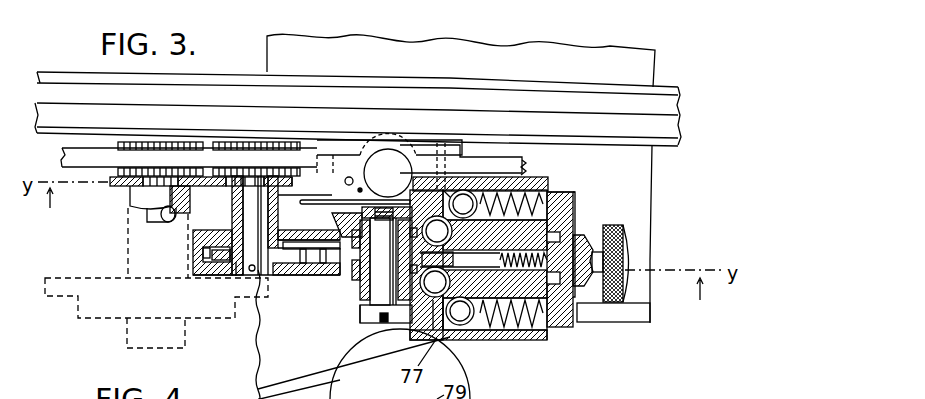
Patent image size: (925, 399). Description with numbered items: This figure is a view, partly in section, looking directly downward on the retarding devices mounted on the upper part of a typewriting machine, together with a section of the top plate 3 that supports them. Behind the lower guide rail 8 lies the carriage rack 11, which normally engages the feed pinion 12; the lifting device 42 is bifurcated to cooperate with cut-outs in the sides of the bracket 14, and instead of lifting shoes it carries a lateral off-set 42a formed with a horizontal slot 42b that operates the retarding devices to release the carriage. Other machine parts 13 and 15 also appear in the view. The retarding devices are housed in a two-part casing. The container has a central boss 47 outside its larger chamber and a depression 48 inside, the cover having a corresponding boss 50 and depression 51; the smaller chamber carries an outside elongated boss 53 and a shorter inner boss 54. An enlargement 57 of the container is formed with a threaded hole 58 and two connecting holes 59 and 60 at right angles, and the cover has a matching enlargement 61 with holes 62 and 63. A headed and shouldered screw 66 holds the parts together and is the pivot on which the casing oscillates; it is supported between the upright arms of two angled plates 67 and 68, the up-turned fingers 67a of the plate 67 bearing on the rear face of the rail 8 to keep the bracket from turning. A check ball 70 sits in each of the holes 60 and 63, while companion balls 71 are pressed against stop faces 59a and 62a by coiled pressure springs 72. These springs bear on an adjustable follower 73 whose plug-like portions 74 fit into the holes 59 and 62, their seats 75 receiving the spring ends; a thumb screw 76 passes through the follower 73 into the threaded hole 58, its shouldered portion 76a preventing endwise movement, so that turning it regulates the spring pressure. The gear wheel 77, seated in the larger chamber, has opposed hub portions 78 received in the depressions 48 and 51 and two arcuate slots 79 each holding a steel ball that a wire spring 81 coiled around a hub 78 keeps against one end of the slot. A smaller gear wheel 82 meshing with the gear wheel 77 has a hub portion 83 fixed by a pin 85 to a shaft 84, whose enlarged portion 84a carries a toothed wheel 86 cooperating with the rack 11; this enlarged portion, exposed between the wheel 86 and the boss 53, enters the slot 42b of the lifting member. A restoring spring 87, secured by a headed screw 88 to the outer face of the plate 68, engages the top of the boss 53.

The frame 3 is at (648, 68).
The lower guide rail 8 is at (570, 91).
The rack 11 is at (481, 166).
The feed pinion 12 is at (152, 148).
The roller 13 is at (152, 216).
The bracket 14 is at (135, 198).
The base 15 is at (57, 294).
The lifting device 42 is at (111, 170).
The lateral off-set 42a is at (228, 176).
The horizontal slot 42b is at (292, 176).
The central boss 47 is at (340, 229).
The depression 48 is at (420, 200).
The boss 50 is at (331, 262).
The depression 51 is at (353, 300).
The outside elongated boss 53 is at (277, 203).
The inner boss 54 is at (226, 247).
The enlargement 57 is at (504, 183).
The threaded hole 58 is at (483, 261).
The hole 59 is at (527, 171).
The stop face 59a is at (443, 198).
The hole 60 is at (447, 200).
The enlargement 61 is at (545, 339).
The hole 62 is at (500, 331).
The stop face 62a is at (456, 338).
The hole 63 is at (433, 312).
The pivot screw 66 is at (362, 318).
The angled plate 67 is at (328, 182).
The up-turned fingers 67a is at (338, 147).
The angled plate 68 is at (384, 206).
The check ball 70 is at (436, 256).
The companion ball 71 is at (461, 257).
The coiled pressure spring 72 is at (549, 197).
The follower 73 is at (575, 212).
The plug-like portions 74 is at (549, 193).
The seats 75 is at (578, 204).
The thumb screw 76 is at (622, 243).
The shouldered portion 76a is at (590, 240).
The gear wheel 77 is at (309, 276).
The hub portions 78 is at (359, 308).
The arcuate slots 79 is at (327, 262).
The wire spring 81 is at (420, 239).
The smaller gear wheel 82 is at (305, 282).
The hub portion 83 is at (237, 278).
The shaft 84 is at (233, 198).
The enlarged portion 84a is at (243, 176).
The pin 85 is at (252, 272).
The toothed wheel 86 is at (258, 150).
The restoring spring 87 is at (340, 151).
The headed screw 88 is at (372, 198).